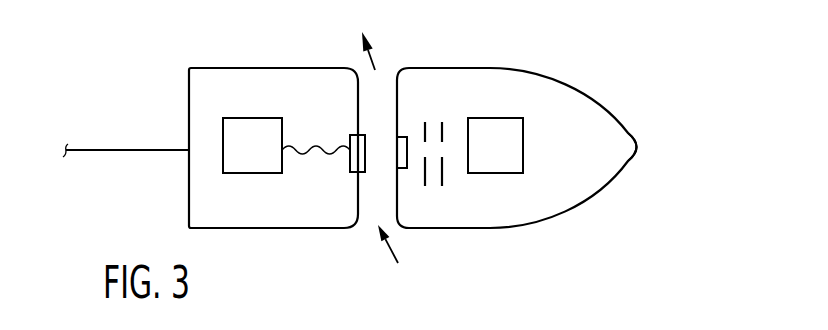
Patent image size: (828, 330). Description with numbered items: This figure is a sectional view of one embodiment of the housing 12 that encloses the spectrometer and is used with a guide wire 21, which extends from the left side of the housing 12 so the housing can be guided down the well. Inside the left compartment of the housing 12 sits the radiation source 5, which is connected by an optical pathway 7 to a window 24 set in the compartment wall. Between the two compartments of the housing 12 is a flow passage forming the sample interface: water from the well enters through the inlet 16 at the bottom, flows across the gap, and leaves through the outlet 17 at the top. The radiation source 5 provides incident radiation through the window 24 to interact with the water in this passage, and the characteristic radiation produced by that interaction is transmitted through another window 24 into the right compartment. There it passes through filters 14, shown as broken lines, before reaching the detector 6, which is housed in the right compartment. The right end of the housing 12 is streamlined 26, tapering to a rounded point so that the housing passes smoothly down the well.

The housing 12 is at (556, 80).
The guide wire 21 is at (104, 150).
The radiation source 5 is at (257, 161).
The detector 6 is at (504, 161).
The optical pathway 7 is at (320, 146).
The window 24 is at (348, 163).
The filters 14 is at (421, 121).
The outlet 17 is at (375, 55).
The inlet 16 is at (386, 246).
The streamlined 26 is at (639, 157).